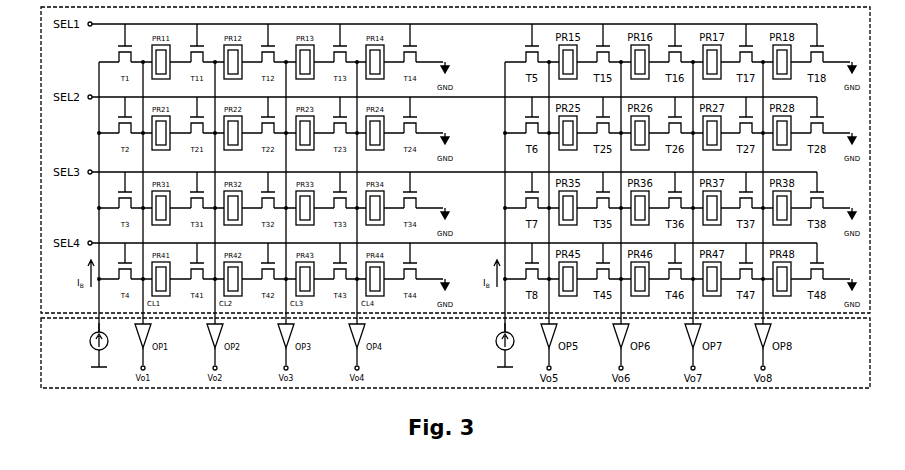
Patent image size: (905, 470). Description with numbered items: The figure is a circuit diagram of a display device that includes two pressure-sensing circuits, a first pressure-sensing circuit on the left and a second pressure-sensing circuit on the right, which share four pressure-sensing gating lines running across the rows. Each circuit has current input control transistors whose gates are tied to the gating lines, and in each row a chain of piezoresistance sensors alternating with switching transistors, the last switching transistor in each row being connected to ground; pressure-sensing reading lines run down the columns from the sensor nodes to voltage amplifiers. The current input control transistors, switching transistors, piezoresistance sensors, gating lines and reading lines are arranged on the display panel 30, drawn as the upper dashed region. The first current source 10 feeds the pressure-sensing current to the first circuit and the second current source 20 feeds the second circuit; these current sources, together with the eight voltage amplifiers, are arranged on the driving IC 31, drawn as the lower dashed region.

The display panel 30 is at (41, 102).
The driving IC 31 is at (41, 357).
The first current source 10 is at (93, 355).
The second current source 20 is at (499, 355).